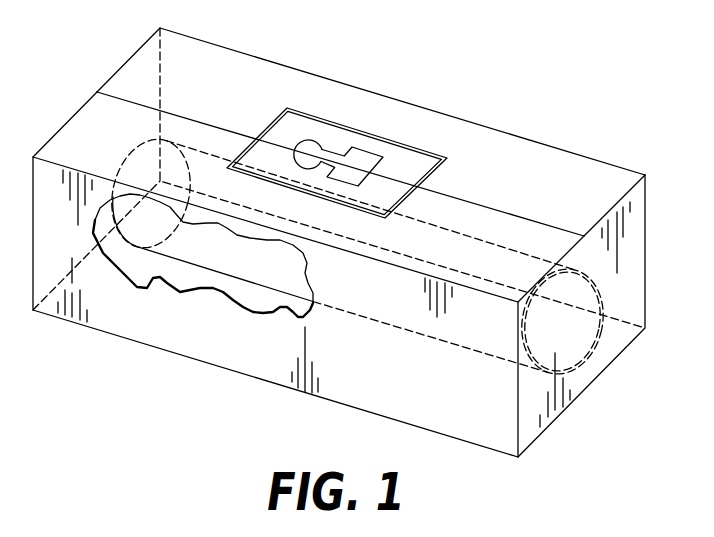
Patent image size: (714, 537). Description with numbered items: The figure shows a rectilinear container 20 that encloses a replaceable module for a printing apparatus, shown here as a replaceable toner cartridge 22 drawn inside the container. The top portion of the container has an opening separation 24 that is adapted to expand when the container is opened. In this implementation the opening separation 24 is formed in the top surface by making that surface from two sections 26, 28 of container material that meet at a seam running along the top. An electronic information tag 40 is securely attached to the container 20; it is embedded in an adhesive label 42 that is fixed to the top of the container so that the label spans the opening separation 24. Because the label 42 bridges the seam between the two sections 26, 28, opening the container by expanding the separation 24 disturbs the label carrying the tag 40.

The container 20 is at (543, 119).
The replaceable toner cartridge 22 is at (193, 267).
The opening separation 24 is at (112, 93).
The section of container material 26 is at (202, 53).
The section of container material 28 is at (77, 132).
The electronic information tag 40 is at (332, 124).
The adhesive label 42 is at (403, 143).